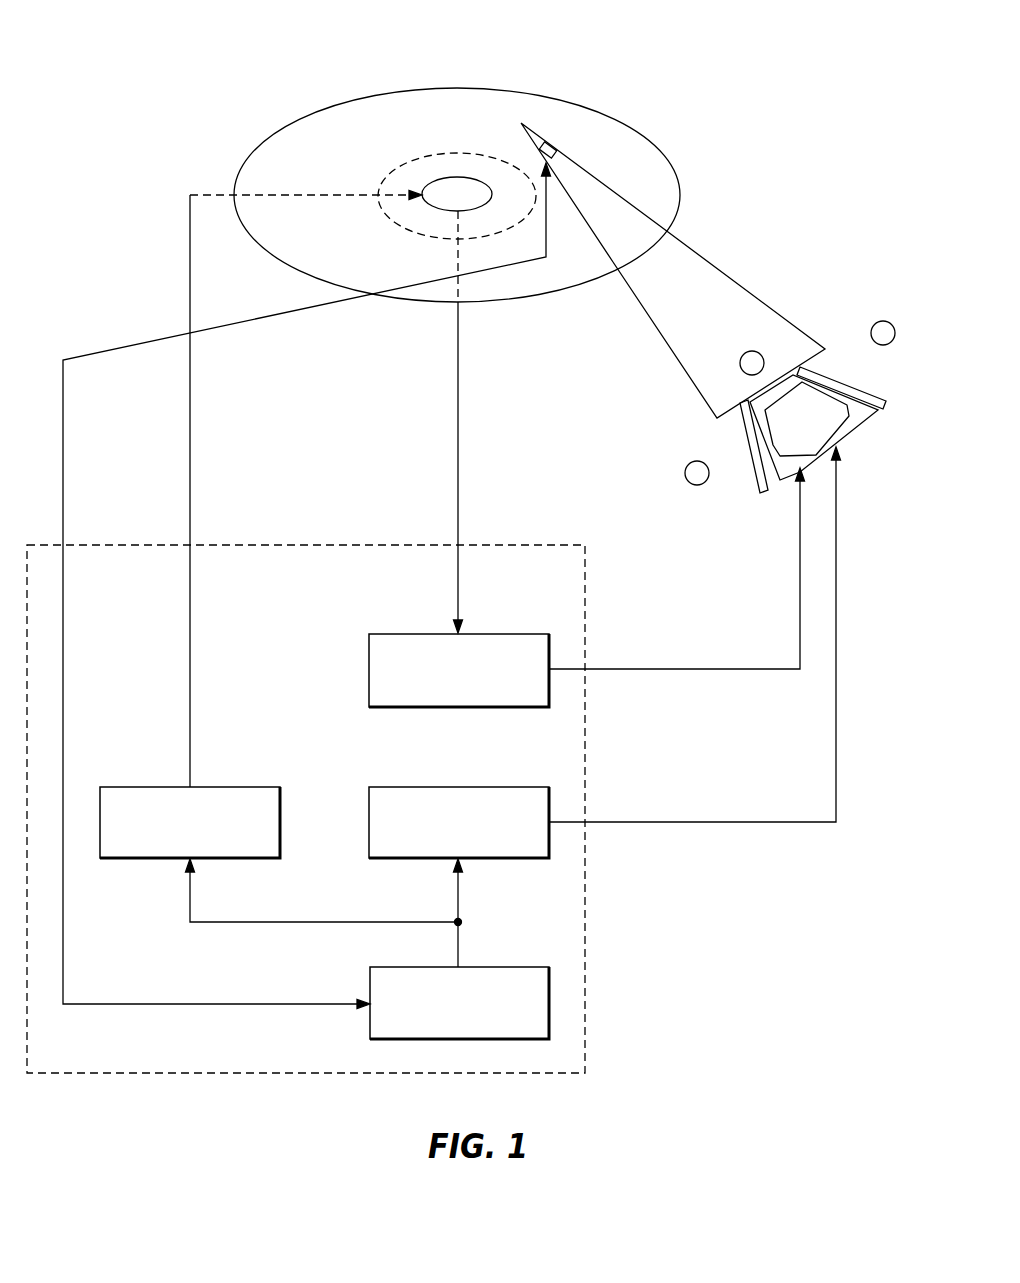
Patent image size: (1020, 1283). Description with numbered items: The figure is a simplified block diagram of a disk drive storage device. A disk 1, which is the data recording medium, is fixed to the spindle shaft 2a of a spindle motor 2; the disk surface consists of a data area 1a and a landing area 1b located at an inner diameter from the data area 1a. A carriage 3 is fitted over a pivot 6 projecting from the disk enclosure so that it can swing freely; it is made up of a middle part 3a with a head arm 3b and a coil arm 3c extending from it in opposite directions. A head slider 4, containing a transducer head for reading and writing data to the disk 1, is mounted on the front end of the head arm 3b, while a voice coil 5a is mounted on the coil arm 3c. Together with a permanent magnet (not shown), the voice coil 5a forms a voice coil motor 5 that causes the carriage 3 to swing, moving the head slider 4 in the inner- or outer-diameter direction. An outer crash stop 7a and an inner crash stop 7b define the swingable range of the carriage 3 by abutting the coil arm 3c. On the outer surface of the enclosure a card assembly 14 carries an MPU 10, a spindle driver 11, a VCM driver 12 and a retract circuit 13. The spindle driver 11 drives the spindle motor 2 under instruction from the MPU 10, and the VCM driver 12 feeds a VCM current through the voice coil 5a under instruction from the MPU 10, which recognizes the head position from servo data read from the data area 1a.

The disk 1 is at (422, 158).
The data area 1a is at (325, 133).
The landing area 1b is at (422, 167).
The spindle motor 2 is at (461, 113).
The spindle shaft 2a is at (473, 177).
The carriage 3 is at (707, 248).
The middle part 3a is at (692, 348).
The head arm 3b is at (647, 295).
The coil arm 3c is at (854, 385).
The head slider 4 is at (550, 148).
The voice coil motor 5 is at (858, 437).
The voice coil 5a is at (763, 438).
The pivot 6 is at (748, 365).
The outer crash stop 7a is at (689, 479).
The inner crash stop 7b is at (877, 323).
The MPU 10 is at (513, 963).
The spindle driver 11 is at (245, 784).
The VCM driver 12 is at (512, 786).
The retract circuit 13 is at (512, 633).
The card assembly 14 is at (586, 940).